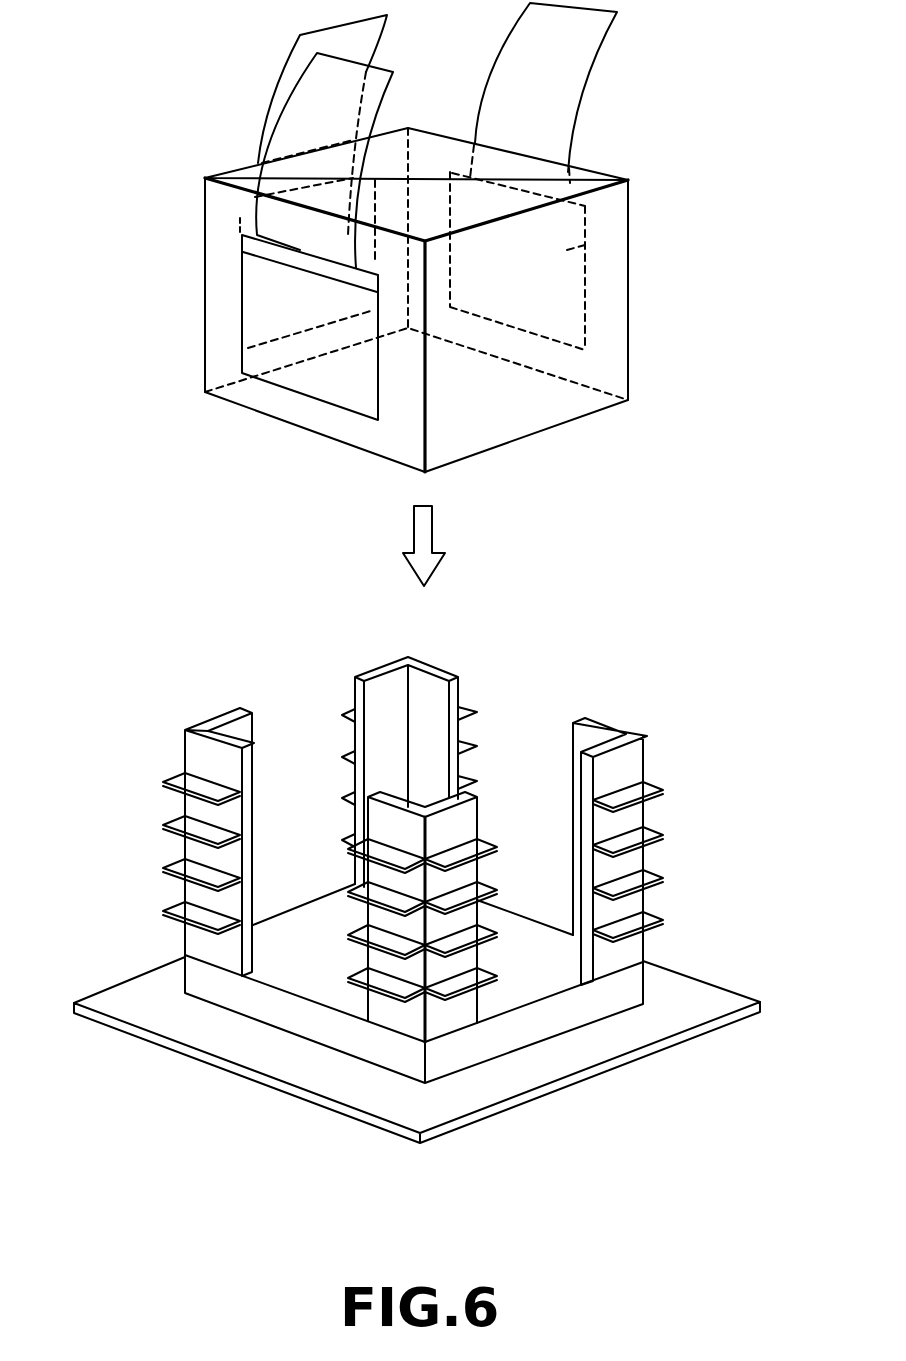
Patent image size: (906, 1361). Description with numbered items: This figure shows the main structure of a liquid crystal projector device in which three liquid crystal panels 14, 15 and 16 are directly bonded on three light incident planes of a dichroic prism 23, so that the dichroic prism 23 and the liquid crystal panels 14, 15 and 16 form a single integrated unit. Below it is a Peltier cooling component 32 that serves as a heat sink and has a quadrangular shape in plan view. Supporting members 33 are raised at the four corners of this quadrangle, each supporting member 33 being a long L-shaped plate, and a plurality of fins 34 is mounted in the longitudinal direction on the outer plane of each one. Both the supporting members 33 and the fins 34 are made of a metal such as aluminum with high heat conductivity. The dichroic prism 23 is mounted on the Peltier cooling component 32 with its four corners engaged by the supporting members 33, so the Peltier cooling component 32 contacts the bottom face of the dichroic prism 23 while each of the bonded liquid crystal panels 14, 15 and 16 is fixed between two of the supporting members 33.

The liquid crystal panel 14 is at (264, 307).
The liquid crystal panel 15 is at (238, 218).
The liquid crystal panel 16 is at (585, 245).
The dichroic prism 23 is at (541, 418).
The Peltier cooling component 32 is at (593, 1002).
The supporting member 33 is at (447, 673).
The fin 34 is at (165, 783).